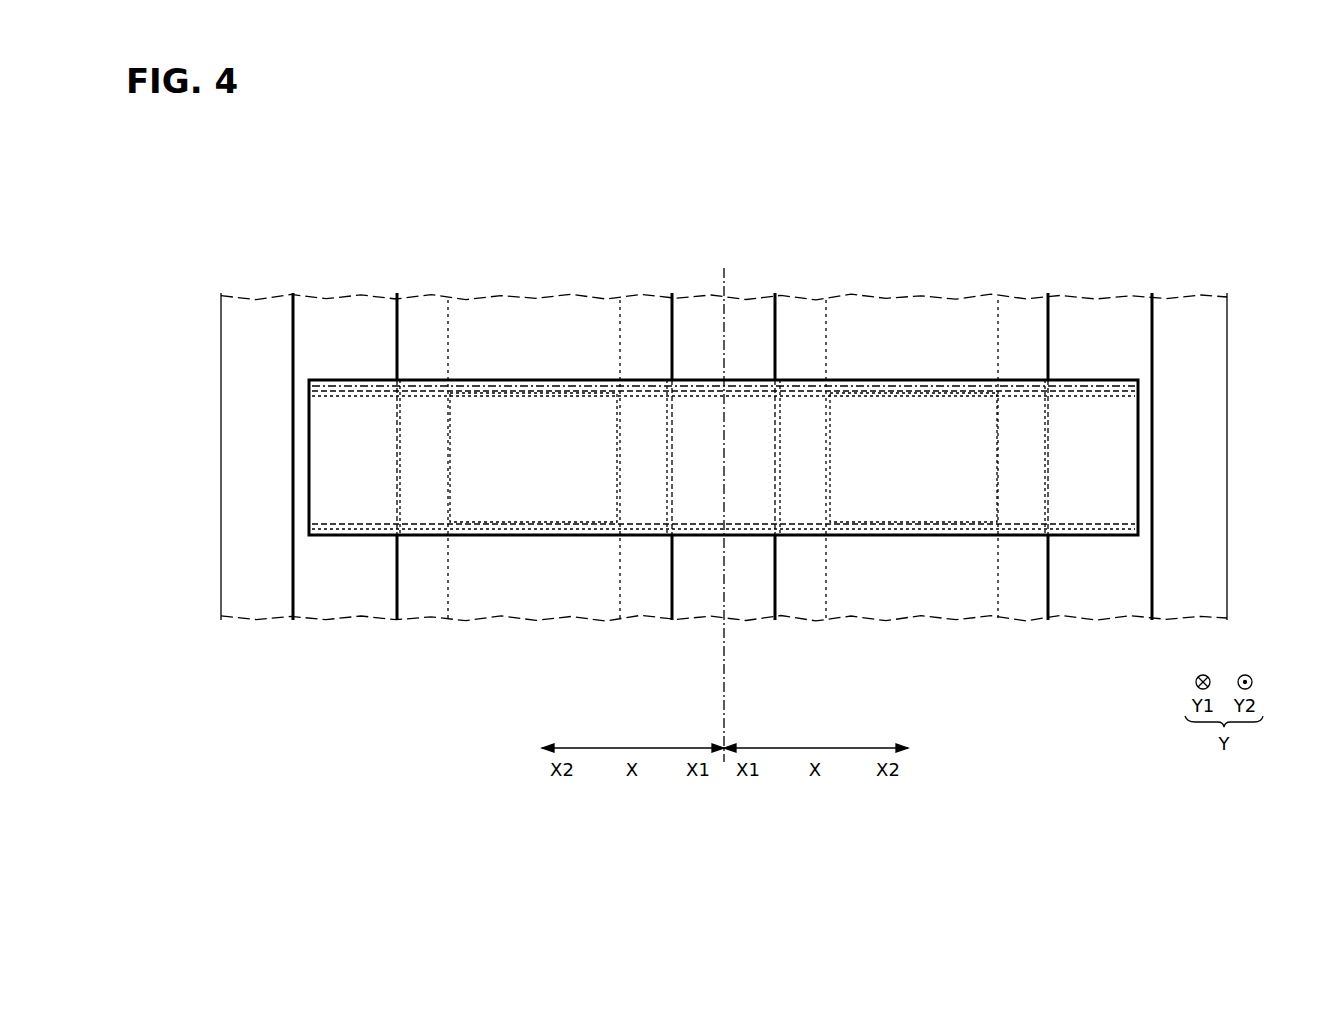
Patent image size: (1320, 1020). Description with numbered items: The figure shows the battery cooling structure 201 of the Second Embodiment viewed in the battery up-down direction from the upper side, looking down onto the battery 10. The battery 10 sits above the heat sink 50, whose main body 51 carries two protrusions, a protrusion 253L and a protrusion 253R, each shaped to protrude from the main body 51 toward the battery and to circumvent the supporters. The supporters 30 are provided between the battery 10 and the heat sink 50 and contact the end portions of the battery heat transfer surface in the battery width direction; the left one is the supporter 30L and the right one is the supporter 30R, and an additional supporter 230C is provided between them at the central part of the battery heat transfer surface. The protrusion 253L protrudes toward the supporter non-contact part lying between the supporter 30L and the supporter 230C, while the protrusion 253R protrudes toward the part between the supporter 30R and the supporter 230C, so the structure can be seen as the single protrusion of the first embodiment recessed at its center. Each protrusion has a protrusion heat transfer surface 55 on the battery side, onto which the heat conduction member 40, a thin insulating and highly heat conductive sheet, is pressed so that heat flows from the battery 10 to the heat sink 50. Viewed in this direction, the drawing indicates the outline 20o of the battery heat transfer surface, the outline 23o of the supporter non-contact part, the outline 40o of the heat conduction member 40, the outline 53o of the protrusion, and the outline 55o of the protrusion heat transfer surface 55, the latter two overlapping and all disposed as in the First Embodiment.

The battery cooling structure 201 is at (222, 181).
The battery 10 is at (310, 385).
The outline of the battery heat transfer surface 20o is at (309, 405).
The outline of the supporter non-contact part 23o is at (400, 438).
The outline of the heat conduction member 40o is at (400, 472).
The outline of the protrusion 53o is at (400, 505).
The outline of the protrusion heat transfer surface 55o is at (725, 614).
The heat sink 50 is at (722, 398).
The main body 51 is at (253, 312).
The supporter 30 is at (722, 411).
The supporter 30L is at (332, 322).
The supporter 30R is at (1107, 318).
The supporter 230C is at (707, 318).
The heat conduction member 40 is at (400, 312).
The protrusion heat transfer surface 55 is at (724, 410).
The protrusion 253L is at (532, 410).
The protrusion 253R is at (914, 410).